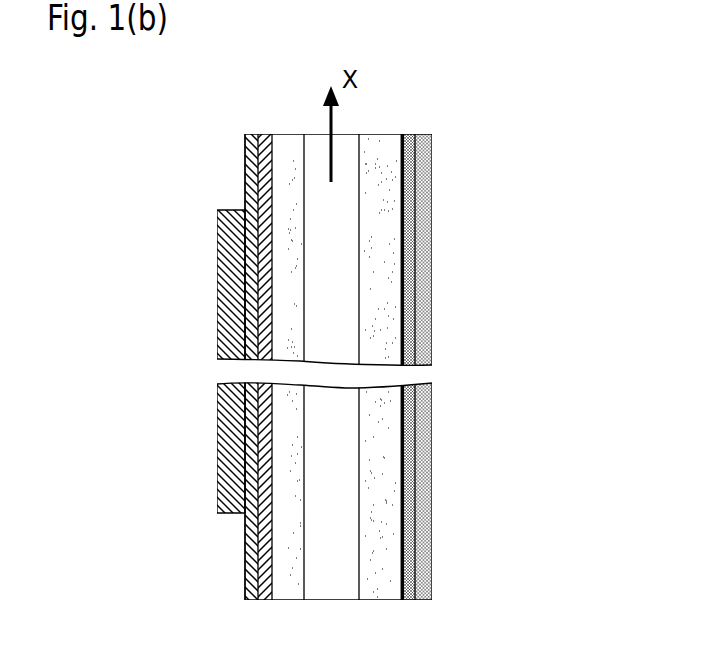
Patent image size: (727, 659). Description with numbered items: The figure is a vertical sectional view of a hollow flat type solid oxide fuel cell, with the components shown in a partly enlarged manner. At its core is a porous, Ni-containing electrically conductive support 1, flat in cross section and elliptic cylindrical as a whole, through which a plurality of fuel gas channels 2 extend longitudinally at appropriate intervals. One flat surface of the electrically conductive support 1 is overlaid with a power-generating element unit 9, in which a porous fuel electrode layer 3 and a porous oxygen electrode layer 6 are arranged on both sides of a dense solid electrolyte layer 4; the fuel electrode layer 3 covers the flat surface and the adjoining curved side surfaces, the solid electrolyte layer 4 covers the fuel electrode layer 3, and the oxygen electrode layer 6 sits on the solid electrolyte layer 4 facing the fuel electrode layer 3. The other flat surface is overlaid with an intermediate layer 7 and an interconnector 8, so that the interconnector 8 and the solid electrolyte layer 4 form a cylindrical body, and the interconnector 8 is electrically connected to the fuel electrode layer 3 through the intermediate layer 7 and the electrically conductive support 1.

The electrically conductive support 1 is at (372, 150).
The fuel gas channels 2 is at (306, 153).
The fuel electrode layer 3 is at (265, 133).
The solid electrolyte layer 4 is at (251, 134).
The oxygen electrode layer 6 is at (222, 209).
The intermediate layer 7 is at (405, 202).
The interconnector 8 is at (427, 150).
The power-generating element unit 9 is at (203, 315).